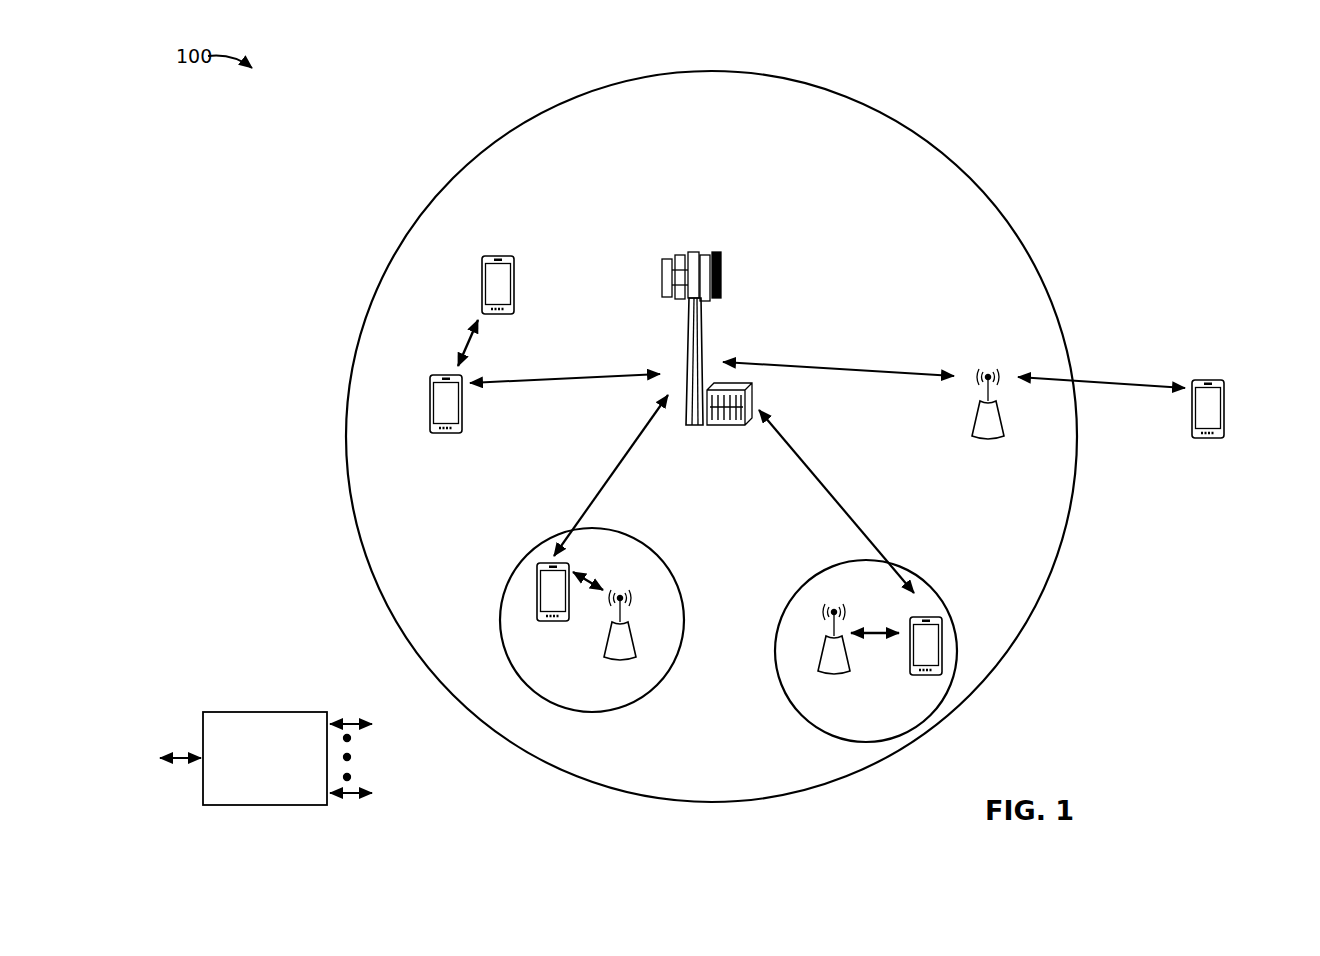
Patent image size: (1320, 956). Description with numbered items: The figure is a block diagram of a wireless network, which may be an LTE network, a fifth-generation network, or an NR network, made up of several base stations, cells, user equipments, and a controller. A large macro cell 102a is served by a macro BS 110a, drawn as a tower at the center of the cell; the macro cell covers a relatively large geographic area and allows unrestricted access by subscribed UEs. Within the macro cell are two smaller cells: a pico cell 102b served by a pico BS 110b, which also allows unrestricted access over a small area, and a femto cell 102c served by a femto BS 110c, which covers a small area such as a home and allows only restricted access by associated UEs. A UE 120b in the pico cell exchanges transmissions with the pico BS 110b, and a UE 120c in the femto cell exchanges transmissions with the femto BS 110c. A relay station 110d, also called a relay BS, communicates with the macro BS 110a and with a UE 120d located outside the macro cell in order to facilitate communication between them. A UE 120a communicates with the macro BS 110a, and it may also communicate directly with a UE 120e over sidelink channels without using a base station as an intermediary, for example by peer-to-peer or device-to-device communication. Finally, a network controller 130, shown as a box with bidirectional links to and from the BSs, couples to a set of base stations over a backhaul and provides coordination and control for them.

The macro cell 102a is at (952, 162).
The pico cell 102b is at (674, 564).
The femto cell 102c is at (807, 574).
The macro BS 110a is at (701, 244).
The pico BS 110b is at (647, 650).
The femto BS 110c is at (820, 666).
The relay station 110d is at (987, 368).
The UE 120a is at (428, 402).
The UE 120b is at (546, 622).
The UE 120c is at (914, 674).
The UE 120d is at (1220, 379).
The UE 120e is at (481, 272).
The network controller 130 is at (264, 708).